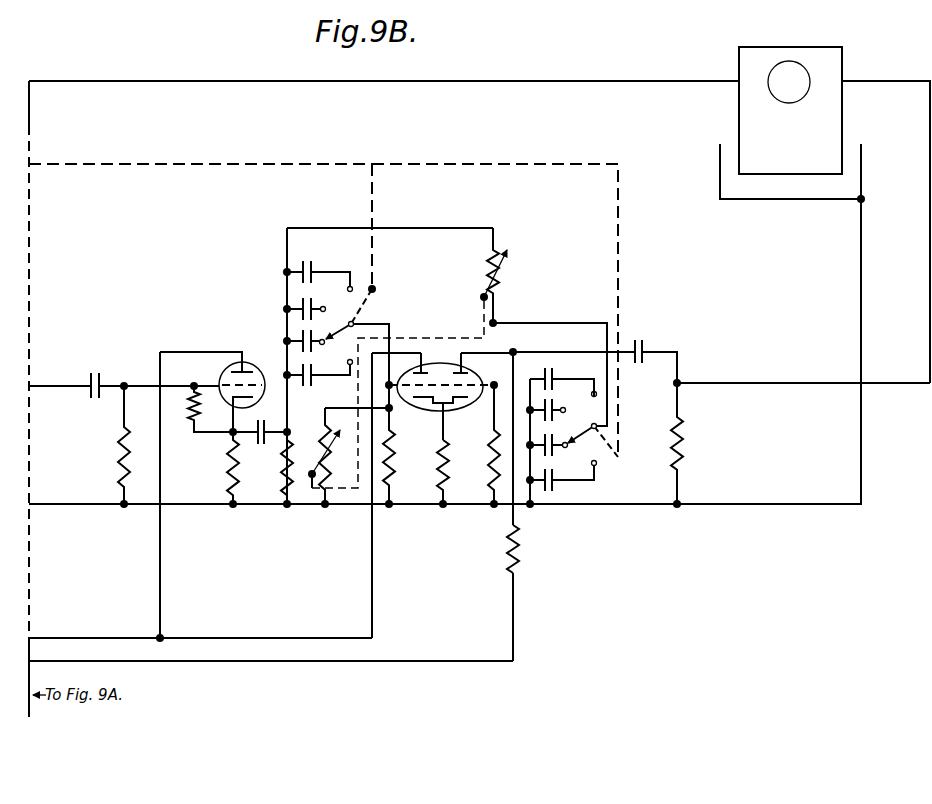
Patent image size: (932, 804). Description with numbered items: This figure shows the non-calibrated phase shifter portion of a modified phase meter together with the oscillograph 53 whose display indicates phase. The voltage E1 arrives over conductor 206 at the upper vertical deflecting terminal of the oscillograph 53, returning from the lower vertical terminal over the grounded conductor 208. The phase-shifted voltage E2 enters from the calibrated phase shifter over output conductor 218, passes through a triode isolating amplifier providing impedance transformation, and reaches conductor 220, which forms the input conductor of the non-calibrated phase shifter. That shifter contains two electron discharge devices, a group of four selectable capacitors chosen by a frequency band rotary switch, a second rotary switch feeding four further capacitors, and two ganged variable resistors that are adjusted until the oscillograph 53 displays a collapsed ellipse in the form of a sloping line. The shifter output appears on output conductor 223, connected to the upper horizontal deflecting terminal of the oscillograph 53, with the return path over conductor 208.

The oscillograph 53 is at (748, 55).
The conductor 206 is at (103, 83).
The grounded conductor 208 is at (864, 222).
The output conductor of the calibrated phase shifter 218 is at (64, 386).
The output conductor 223 is at (745, 383).
The conductor 220 is at (286, 245).